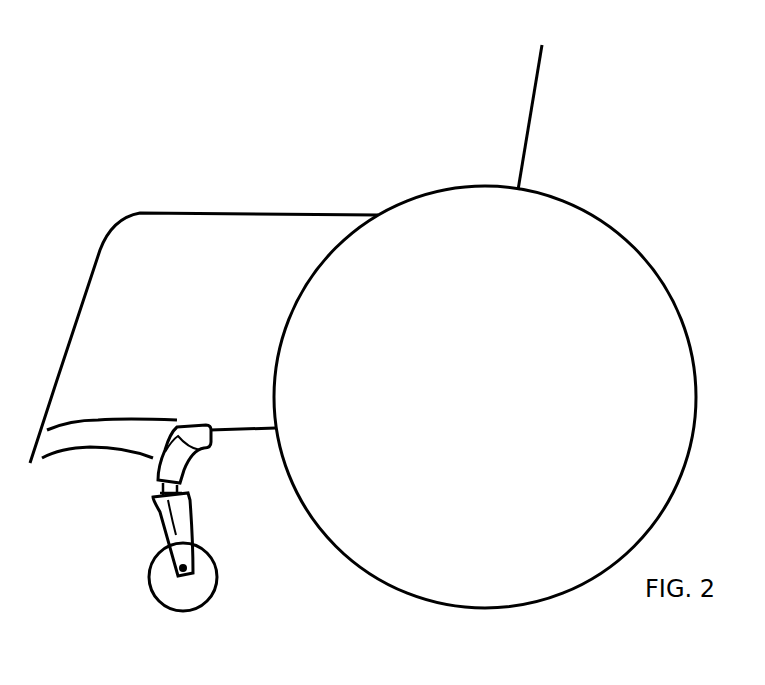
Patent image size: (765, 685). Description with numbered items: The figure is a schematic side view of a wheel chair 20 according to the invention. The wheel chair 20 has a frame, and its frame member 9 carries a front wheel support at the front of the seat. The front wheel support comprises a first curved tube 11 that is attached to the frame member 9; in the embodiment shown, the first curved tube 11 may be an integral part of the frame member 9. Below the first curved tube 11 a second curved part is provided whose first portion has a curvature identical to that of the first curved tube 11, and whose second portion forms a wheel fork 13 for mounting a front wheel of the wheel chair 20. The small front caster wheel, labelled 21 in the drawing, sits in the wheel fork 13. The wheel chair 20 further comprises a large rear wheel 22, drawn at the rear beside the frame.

The wheel chair 20 is at (370, 52).
The rear wheel 22 is at (355, 539).
The frame member 9 is at (172, 432).
The first curved tube 11 is at (193, 443).
The wheel fork 13 is at (157, 522).
The caster wheel 21 is at (157, 578).